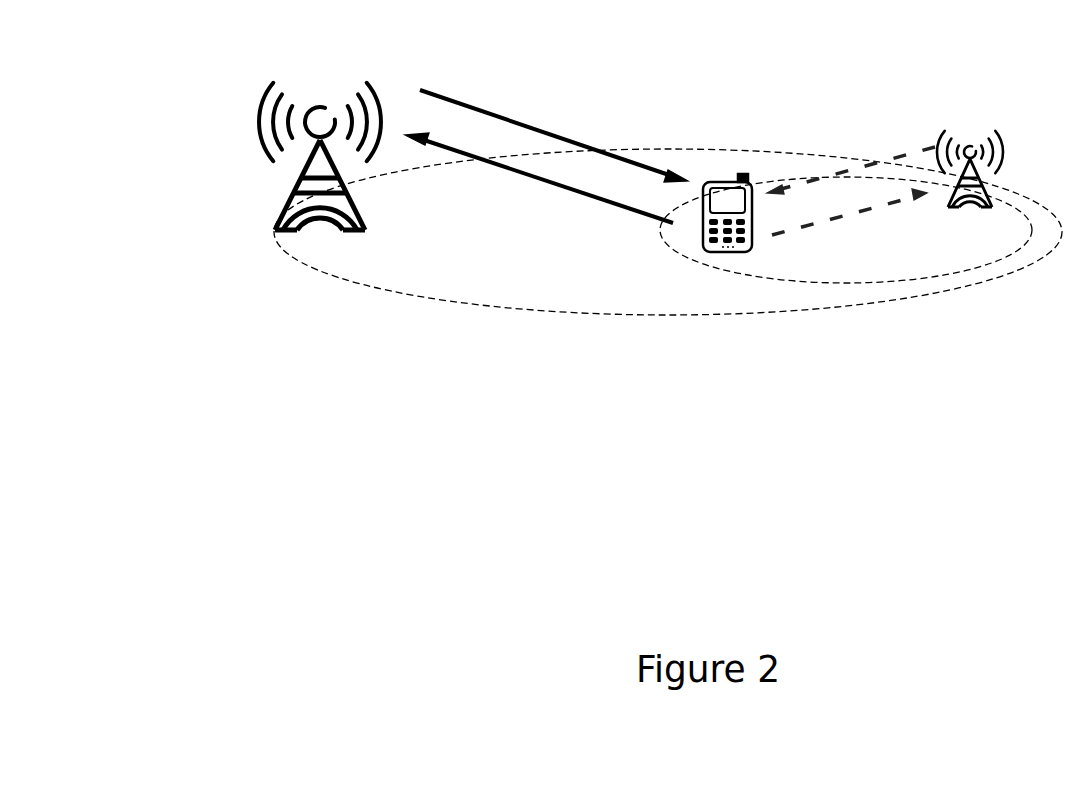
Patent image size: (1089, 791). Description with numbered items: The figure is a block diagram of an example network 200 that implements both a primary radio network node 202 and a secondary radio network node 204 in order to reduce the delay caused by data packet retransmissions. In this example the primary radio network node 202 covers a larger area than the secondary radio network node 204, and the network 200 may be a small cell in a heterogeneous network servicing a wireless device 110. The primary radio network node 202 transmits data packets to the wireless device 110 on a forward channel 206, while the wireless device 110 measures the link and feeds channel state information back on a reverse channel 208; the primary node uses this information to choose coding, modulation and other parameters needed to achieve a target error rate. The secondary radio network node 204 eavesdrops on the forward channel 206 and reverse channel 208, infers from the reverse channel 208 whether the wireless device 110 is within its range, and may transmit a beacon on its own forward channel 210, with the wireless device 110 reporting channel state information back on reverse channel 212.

The network 200 is at (681, 258).
The primary radio network node 202 is at (302, 131).
The secondary radio network node 204 is at (1004, 152).
The forward channel 206 is at (554, 132).
The reverse channel 208 is at (539, 195).
The forward channel 210 is at (851, 160).
The reverse channel 212 is at (849, 231).
The wireless device 110 is at (721, 241).